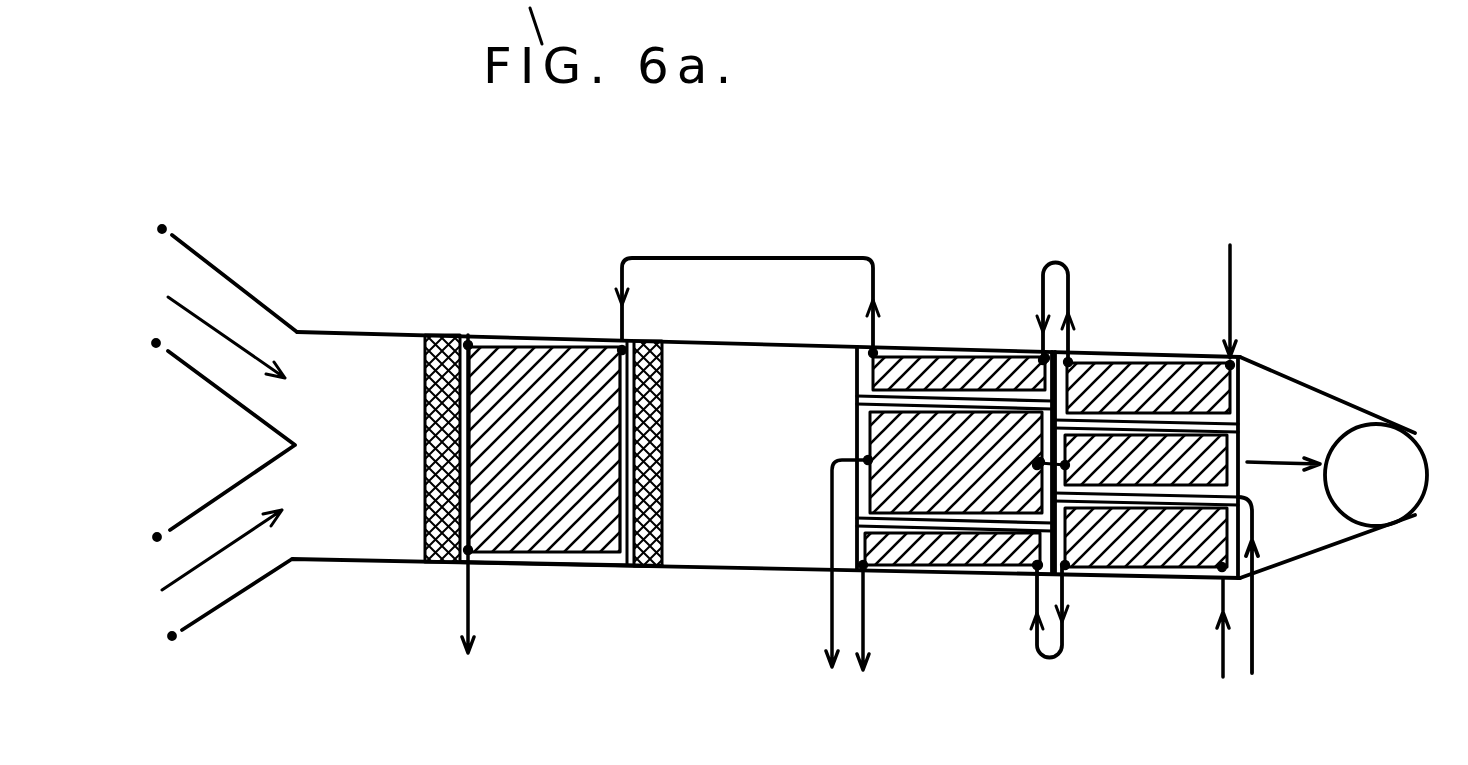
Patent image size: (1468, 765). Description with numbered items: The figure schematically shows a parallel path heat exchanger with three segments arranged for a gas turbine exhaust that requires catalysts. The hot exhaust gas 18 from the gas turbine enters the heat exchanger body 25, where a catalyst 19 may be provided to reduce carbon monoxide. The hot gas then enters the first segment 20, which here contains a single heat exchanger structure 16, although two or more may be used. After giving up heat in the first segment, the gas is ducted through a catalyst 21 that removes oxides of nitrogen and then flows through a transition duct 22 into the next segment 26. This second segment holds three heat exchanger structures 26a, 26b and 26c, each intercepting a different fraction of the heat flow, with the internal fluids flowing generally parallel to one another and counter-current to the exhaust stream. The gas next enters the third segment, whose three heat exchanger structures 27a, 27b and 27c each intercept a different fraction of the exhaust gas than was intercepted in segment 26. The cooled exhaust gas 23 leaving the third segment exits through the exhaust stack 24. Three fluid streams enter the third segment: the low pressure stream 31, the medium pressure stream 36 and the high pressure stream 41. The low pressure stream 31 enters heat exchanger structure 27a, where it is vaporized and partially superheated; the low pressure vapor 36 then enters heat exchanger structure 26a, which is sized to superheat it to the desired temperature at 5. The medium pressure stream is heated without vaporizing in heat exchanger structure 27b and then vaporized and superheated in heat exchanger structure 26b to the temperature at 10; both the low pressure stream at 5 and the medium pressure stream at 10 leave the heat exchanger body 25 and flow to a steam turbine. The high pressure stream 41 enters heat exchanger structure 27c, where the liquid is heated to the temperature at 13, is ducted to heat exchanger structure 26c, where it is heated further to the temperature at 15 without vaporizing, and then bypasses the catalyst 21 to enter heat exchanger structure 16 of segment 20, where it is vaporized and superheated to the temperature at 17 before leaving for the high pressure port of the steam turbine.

The low pressure stream outlet temperature point 5 is at (865, 630).
The medium pressure stream outlet temperature point 10 is at (833, 612).
The high pressure liquid temperature point 13 is at (1060, 263).
The high pressure stream temperature point 15 is at (768, 258).
The heat exchanger structure 16 is at (532, 370).
The high pressure superheated outlet temperature point 17 is at (467, 596).
The hot exhaust gas 18 is at (199, 316).
The catalyst 19 is at (425, 487).
The segment 20 is at (571, 585).
The catalyst 21 is at (656, 378).
The transition duct 22 is at (705, 572).
The exhaust gas 23 is at (1275, 462).
The exhaust stack 24 is at (1417, 442).
The heat exchanger body 25 is at (343, 345).
The segment 26 is at (961, 420).
The heat exchanger structure 26a is at (938, 562).
The heat exchanger structure 26b is at (956, 462).
The heat exchanger structure 26c is at (947, 372).
The heat exchanger structure 27a is at (1146, 537).
The heat exchanger structure 27b is at (1146, 460).
The heat exchanger structure 27c is at (1145, 370).
The low pressure stream 31 is at (1223, 650).
The medium pressure stream 36 is at (1032, 640).
The high pressure stream 41 is at (1228, 258).